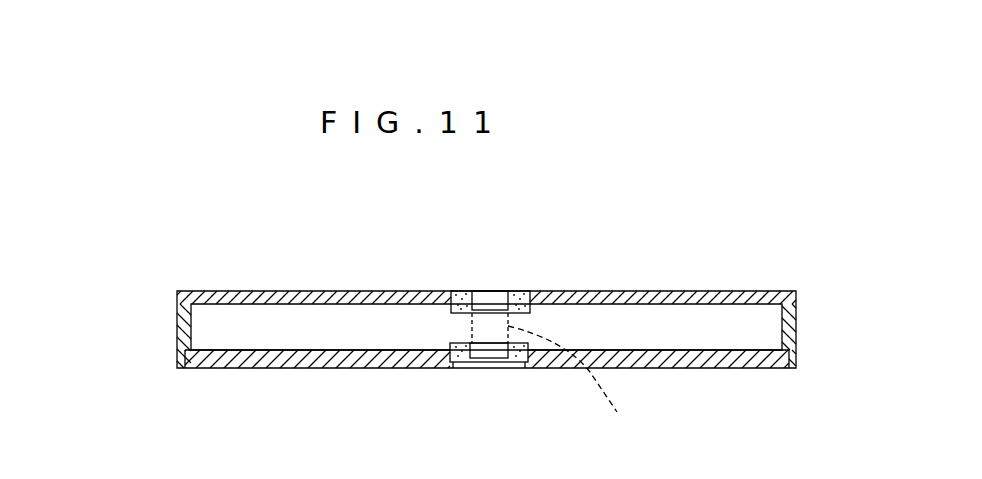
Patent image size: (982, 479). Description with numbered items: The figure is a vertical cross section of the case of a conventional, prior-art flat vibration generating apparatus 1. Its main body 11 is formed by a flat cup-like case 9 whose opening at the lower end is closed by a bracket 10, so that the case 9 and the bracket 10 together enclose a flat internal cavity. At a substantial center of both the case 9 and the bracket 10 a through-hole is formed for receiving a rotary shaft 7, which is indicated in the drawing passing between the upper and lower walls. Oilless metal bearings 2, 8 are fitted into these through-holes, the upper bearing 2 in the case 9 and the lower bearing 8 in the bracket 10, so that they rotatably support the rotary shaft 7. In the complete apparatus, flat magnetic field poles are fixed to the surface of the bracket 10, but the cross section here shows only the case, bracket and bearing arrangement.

The flat vibration generating apparatus 1 is at (157, 310).
The main body 11 is at (281, 291).
The flat cup-like case 9 is at (696, 291).
The bracket 10 is at (240, 358).
The oilless metal bearing 2 is at (520, 291).
The oilless metal bearing 8 is at (455, 356).
The rotary shaft 7 is at (567, 388).